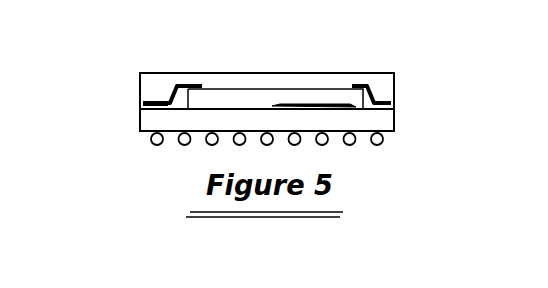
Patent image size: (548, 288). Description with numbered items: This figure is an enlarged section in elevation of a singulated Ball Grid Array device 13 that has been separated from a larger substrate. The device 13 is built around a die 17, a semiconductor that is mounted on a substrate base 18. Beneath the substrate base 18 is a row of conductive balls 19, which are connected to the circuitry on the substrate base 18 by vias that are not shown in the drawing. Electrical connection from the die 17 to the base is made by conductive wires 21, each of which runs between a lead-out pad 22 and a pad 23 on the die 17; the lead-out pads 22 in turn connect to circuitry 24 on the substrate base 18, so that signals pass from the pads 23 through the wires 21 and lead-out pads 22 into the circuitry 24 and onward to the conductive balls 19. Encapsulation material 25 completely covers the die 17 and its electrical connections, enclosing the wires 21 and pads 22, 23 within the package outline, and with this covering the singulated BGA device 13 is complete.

The Ball Grid Array (BGA) device 13 is at (306, 66).
The die 17 is at (345, 93).
The substrate base 18 is at (388, 120).
The conductive balls 19 is at (380, 145).
The conductive wires 21 is at (174, 97).
The lead-out pads 22 is at (152, 100).
The pads 23 is at (198, 88).
The circuitry 24 is at (317, 101).
The encapsulation material 25 is at (262, 72).